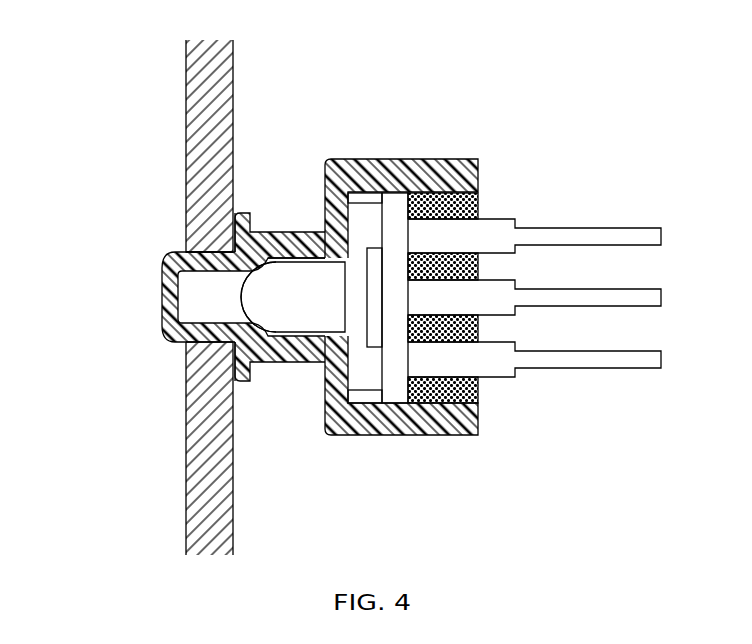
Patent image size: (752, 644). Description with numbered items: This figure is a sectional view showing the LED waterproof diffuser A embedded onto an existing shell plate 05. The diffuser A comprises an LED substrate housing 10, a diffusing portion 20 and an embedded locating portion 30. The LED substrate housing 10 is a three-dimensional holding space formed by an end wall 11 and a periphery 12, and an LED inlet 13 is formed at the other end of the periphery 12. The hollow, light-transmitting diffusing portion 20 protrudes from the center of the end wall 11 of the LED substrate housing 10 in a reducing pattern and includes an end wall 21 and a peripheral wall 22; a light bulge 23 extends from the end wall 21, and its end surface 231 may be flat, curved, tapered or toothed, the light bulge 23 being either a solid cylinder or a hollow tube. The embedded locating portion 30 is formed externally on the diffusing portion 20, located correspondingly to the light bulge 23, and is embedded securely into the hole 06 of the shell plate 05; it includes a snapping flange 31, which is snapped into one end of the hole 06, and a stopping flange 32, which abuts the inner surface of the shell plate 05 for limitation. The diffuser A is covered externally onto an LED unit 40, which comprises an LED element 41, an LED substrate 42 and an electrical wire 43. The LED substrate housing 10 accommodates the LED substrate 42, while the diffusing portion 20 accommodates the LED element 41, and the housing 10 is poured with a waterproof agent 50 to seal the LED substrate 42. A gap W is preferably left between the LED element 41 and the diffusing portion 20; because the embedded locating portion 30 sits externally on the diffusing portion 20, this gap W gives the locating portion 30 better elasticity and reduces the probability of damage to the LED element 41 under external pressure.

The shell plate 05 is at (158, 94).
The hole 06 is at (163, 270).
The embedded locating portion 30 is at (148, 259).
The snapping flange 31 is at (173, 250).
The stopping flange 32 is at (242, 212).
The diffusing portion 20 is at (260, 365).
The end wall 21 is at (263, 350).
The peripheral wall 22 is at (292, 348).
The light bulge 23 is at (208, 338).
The end surface 231 is at (202, 297).
The gap W is at (297, 256).
The LED waterproof diffuser A is at (492, 270).
The LED inlet 13 is at (478, 193).
The LED substrate housing 10 is at (392, 227).
The end wall 11 is at (360, 160).
The periphery 12 is at (362, 82).
The waterproof agent 50 is at (480, 212).
The LED unit 40 is at (492, 373).
The LED element 41 is at (323, 325).
The LED substrate 42 is at (402, 298).
The electrical wire 43 is at (603, 362).